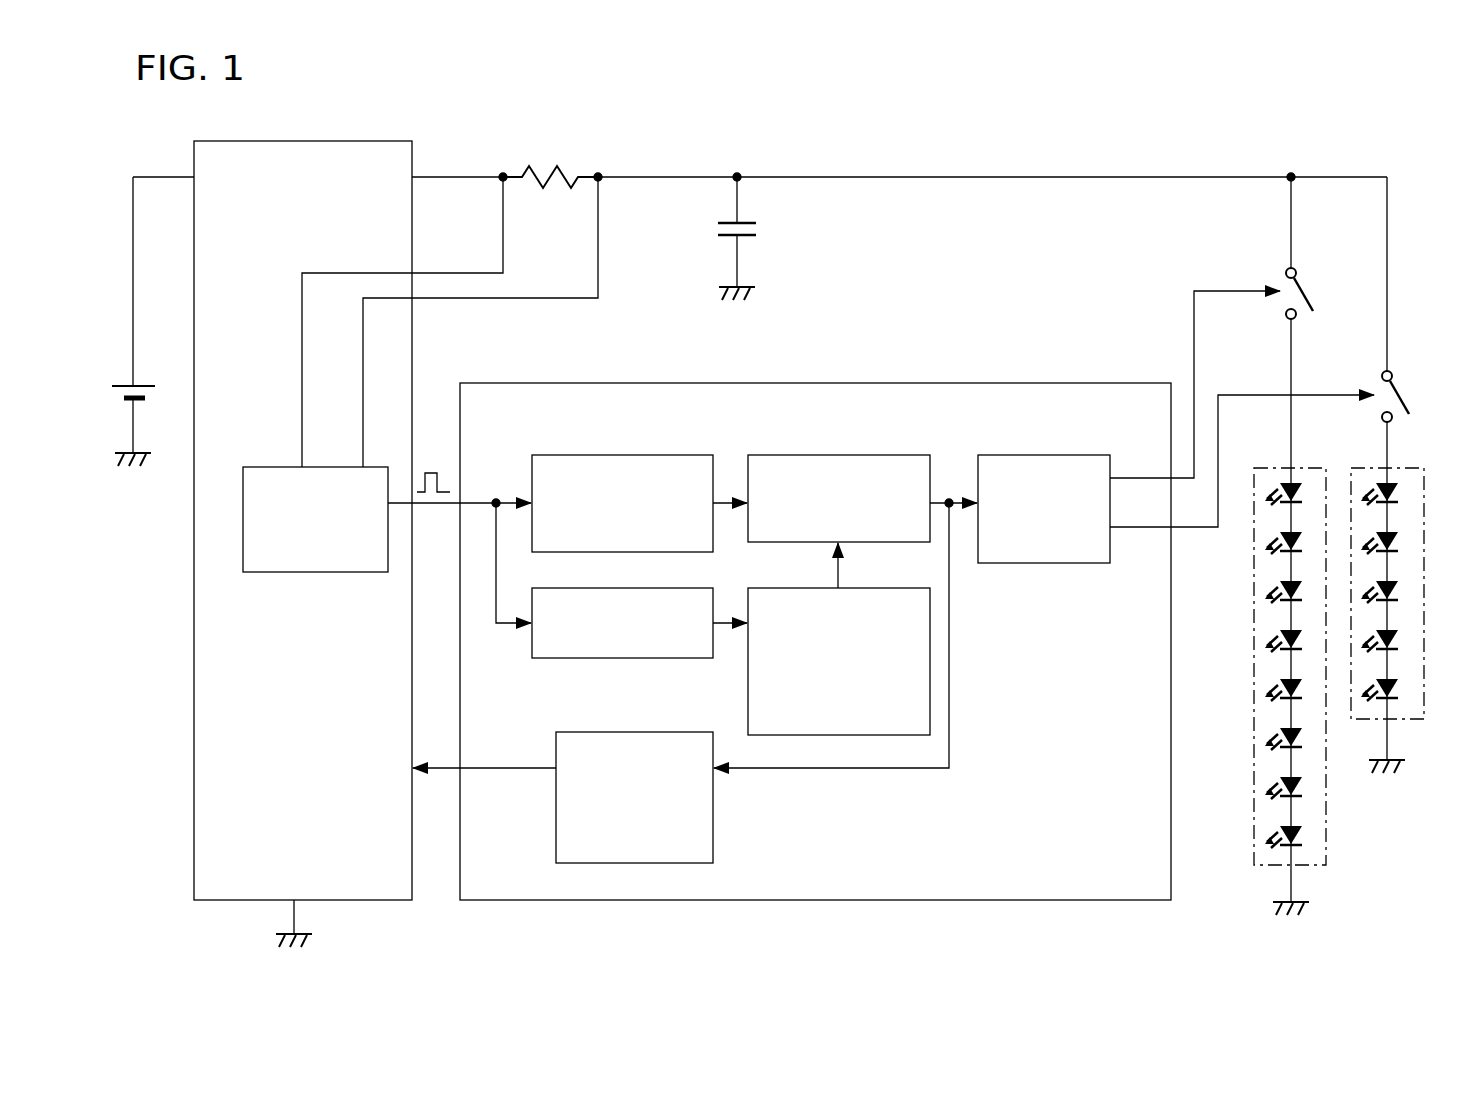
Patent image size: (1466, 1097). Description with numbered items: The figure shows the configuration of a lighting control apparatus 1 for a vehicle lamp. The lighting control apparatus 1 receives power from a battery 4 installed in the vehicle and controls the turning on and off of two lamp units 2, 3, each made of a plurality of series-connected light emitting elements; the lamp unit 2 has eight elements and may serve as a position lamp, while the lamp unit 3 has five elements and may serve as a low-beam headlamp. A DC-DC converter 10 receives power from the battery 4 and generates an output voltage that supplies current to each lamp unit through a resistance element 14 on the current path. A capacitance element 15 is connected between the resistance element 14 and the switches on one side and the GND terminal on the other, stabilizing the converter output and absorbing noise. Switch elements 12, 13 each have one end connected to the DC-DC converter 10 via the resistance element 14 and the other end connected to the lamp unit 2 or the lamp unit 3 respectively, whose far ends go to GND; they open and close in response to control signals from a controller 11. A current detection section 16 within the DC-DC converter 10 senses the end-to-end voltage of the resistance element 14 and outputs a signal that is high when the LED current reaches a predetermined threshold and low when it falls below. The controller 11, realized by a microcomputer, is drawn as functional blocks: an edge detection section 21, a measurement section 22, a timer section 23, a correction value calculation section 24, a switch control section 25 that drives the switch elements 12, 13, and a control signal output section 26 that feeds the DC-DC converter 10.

The lighting control apparatus 1 is at (1085, 150).
The lamp unit 2 is at (1315, 866).
The lamp unit 3 is at (1412, 720).
The battery 4 is at (148, 383).
The DC-DC converter 10 is at (377, 140).
The controller 11 is at (1085, 382).
The switch element 12 is at (1305, 292).
The switch element 13 is at (1400, 398).
The resistance element 14 is at (566, 174).
The capacitance element 15 is at (757, 227).
The current detection section 16 is at (290, 466).
The edge detection section 21 is at (645, 455).
The measurement section 22 is at (665, 588).
The timer section 23 is at (885, 455).
The correction value calculation section 24 is at (870, 588).
The switch control section 25 is at (1060, 455).
The control signal output section 26 is at (625, 732).